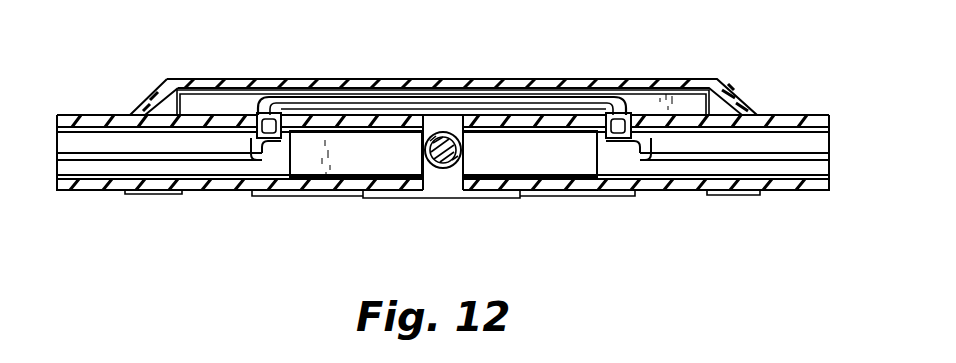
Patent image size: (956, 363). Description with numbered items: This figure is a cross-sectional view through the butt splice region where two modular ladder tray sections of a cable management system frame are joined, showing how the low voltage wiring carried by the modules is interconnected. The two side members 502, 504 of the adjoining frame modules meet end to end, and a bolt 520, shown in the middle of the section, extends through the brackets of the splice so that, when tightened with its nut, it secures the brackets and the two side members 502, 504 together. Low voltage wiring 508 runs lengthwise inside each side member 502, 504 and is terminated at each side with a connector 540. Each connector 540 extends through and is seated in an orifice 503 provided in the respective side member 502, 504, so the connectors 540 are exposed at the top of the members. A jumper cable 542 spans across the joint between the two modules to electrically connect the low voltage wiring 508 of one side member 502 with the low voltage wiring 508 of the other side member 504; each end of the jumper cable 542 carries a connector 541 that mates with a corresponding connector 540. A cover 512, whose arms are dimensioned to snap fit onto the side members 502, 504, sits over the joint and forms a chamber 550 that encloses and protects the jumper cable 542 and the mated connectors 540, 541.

The side member 502 is at (83, 118).
The side member 504 is at (795, 123).
The low voltage wiring 508 is at (93, 155).
The cover 512 is at (153, 102).
The orifice 503 is at (260, 114).
The jumper cable 542 is at (348, 104).
The chamber 550 is at (688, 105).
The connector 540 is at (288, 135).
The connector 541 is at (260, 140).
The bolt 520 is at (443, 170).